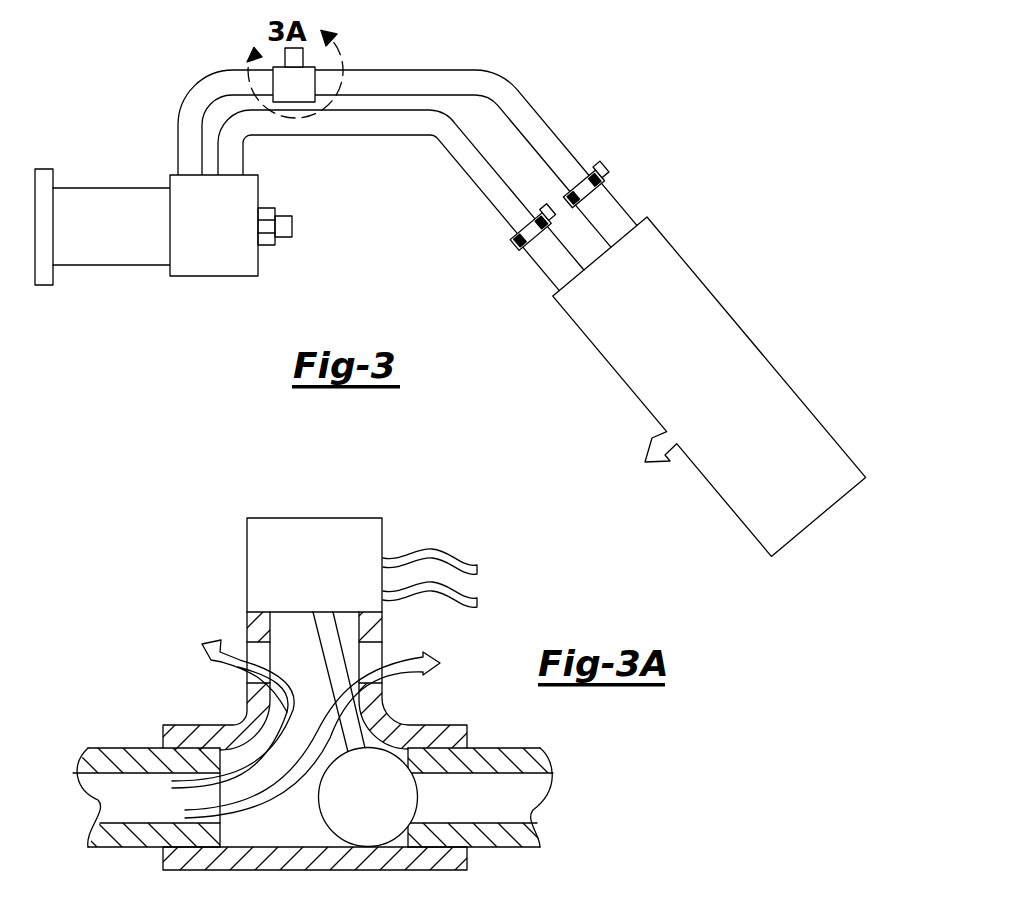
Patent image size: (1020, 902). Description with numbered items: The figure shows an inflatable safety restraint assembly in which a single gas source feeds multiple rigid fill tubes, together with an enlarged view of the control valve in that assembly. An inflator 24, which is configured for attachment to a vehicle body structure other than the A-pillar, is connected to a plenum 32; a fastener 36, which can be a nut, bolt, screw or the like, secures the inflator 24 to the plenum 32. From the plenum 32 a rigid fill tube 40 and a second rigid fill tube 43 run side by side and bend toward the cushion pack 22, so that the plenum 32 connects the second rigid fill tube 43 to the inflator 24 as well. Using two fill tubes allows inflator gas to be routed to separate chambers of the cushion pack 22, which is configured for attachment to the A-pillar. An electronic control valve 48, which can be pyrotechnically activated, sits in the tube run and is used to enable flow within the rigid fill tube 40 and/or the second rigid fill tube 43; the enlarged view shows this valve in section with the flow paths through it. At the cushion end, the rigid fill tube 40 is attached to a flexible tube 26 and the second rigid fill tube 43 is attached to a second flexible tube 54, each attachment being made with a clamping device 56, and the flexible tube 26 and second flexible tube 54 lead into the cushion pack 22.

The cushion pack 22 is at (725, 342).
The inflator 24 is at (83, 257).
The flexible tube 26 is at (613, 215).
The plenum 32 is at (227, 255).
The fastener 36 is at (268, 224).
The rigid fill tube 40 is at (380, 134).
The second rigid fill tube 43 is at (200, 88).
The electronic control valve 48 is at (295, 82).
The second flexible tube 54 is at (555, 268).
The clamping device 56 is at (594, 170).